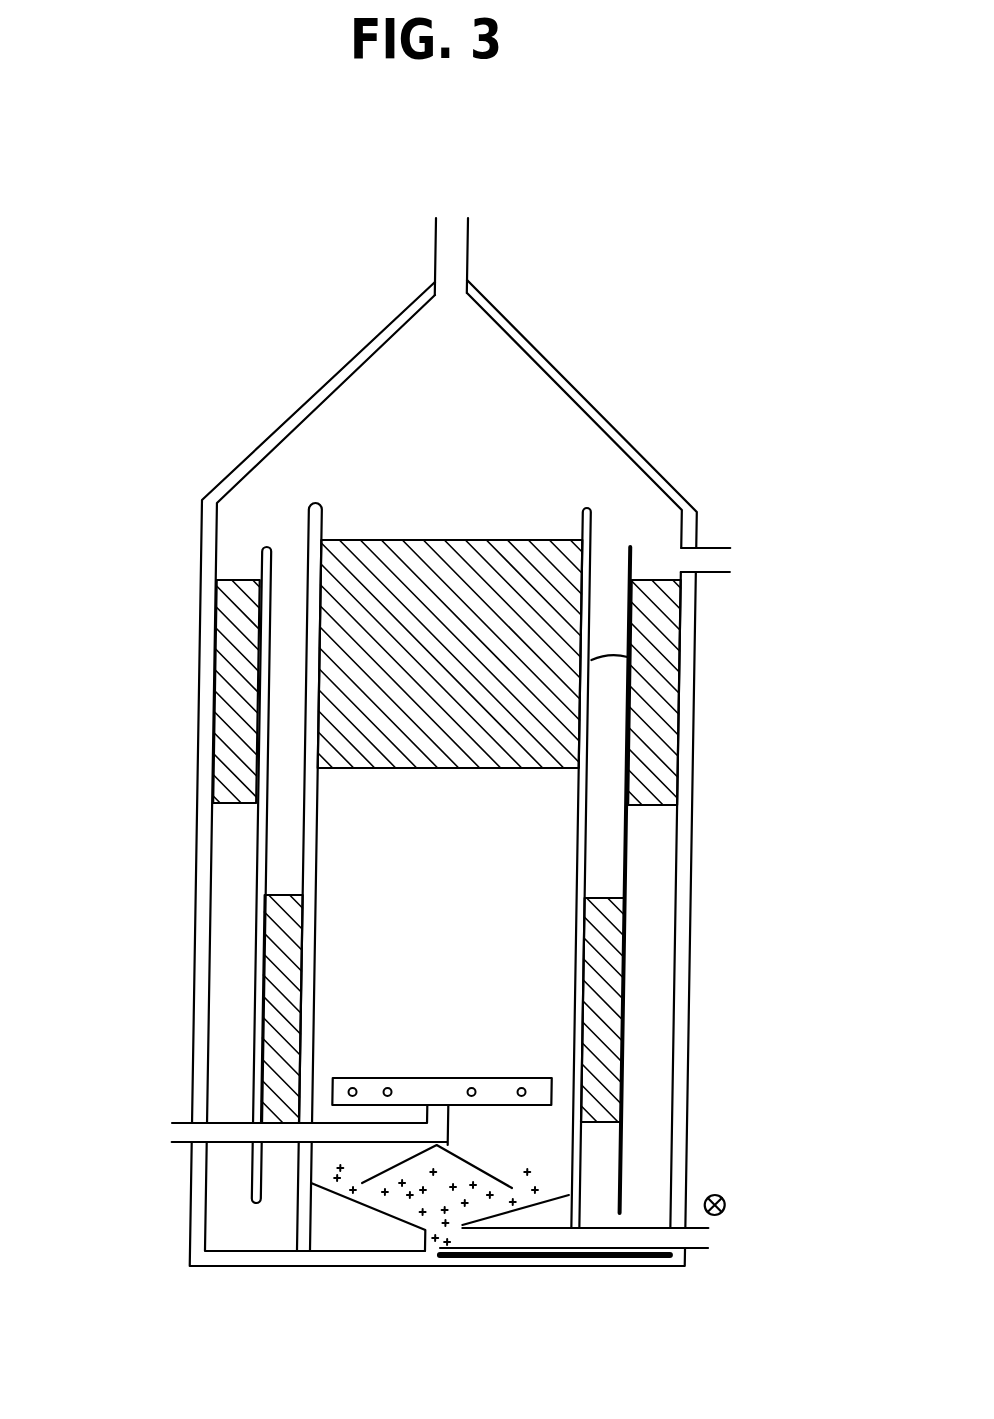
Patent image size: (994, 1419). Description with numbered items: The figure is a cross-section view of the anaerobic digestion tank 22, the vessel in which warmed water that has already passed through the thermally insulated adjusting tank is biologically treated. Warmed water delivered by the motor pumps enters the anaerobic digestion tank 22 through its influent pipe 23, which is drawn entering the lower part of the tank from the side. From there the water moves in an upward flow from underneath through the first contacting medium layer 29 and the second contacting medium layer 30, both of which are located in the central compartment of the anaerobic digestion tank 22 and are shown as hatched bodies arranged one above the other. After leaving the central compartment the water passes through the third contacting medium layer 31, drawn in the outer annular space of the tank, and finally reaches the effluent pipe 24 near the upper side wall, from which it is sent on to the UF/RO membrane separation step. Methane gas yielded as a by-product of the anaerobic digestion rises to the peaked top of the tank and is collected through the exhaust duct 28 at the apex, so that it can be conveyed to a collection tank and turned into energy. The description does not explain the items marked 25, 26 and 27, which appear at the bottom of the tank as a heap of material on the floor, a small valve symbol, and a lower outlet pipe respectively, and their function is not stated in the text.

The anaerobic digestion tank 22 is at (194, 897).
The influent pipe 23 is at (185, 1132).
The effluent pipe 24 is at (731, 558).
The raw material heap 25 is at (491, 1167).
The valve 26 is at (736, 1203).
The discharge pipe 27 is at (720, 1240).
The exhaust duct 28 is at (463, 245).
The first contacting medium layer 29 is at (685, 682).
The second contacting medium layer 30 is at (635, 1010).
The third contacting medium layer 31 is at (686, 762).